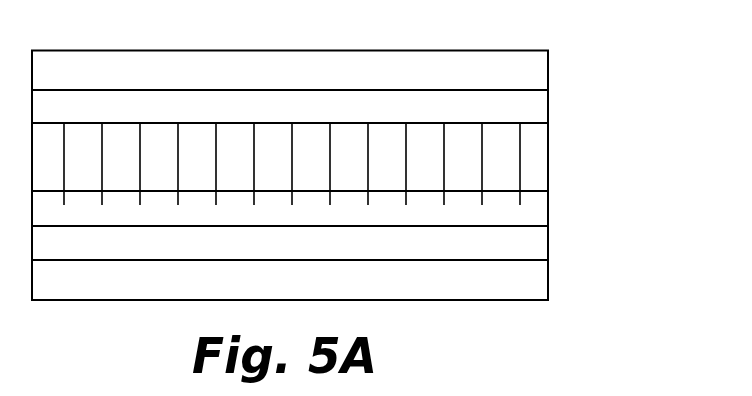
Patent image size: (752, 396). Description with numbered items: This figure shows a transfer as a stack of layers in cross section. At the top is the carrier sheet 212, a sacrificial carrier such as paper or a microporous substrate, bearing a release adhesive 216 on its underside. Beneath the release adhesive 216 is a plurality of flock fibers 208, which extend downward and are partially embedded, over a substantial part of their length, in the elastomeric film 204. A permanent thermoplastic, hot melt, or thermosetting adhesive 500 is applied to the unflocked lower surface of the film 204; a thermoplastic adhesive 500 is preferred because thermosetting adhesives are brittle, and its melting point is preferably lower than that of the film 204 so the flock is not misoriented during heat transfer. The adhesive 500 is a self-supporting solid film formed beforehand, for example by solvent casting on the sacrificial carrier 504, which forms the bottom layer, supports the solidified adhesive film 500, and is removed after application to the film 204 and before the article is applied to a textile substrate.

The carrier sheet 212 is at (548, 66).
The release adhesive 216 is at (548, 104).
The flock fibers 208 is at (548, 150).
The elastomeric film 204 is at (548, 208).
The permanent thermoplastic adhesive 500 is at (548, 236).
The sacrificial carrier 504 is at (548, 272).